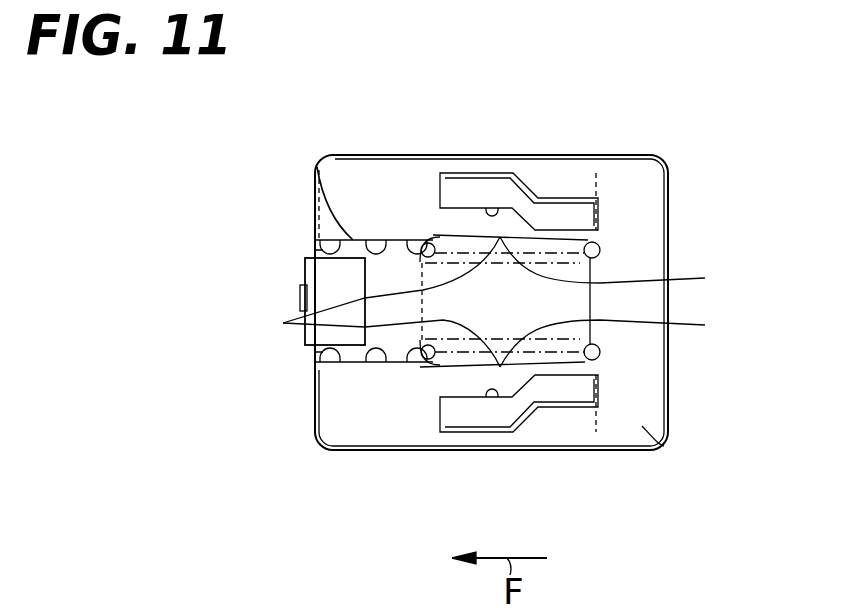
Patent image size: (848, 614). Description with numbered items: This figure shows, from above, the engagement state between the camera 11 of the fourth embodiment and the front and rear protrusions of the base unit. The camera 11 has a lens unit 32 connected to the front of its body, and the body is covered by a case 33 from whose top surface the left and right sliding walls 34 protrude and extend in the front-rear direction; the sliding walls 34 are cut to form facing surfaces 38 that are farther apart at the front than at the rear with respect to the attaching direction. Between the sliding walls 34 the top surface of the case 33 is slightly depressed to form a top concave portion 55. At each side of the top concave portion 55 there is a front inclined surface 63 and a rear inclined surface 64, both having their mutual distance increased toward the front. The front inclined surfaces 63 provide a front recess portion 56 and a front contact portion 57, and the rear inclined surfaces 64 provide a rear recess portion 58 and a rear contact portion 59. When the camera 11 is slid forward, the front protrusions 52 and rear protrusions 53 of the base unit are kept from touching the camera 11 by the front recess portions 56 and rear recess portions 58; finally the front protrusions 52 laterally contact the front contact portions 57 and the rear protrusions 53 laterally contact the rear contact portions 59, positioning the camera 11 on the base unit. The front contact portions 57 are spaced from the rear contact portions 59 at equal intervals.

The camera 11 is at (676, 184).
The lens unit 32 is at (305, 280).
The case 33 is at (642, 426).
The sliding wall 34 is at (538, 405).
The facing surface 38 is at (494, 412).
The front protrusion 52 is at (445, 400).
The rear protrusion 53 is at (578, 372).
The top concave portion 55 is at (335, 195).
The front recess portion 56 is at (363, 362).
The front contact portion 57 is at (405, 365).
The rear recess portion 58 is at (620, 302).
The rear contact portion 59 is at (610, 343).
The front inclined surface 63 is at (333, 353).
The rear inclined surface 64 is at (372, 302).